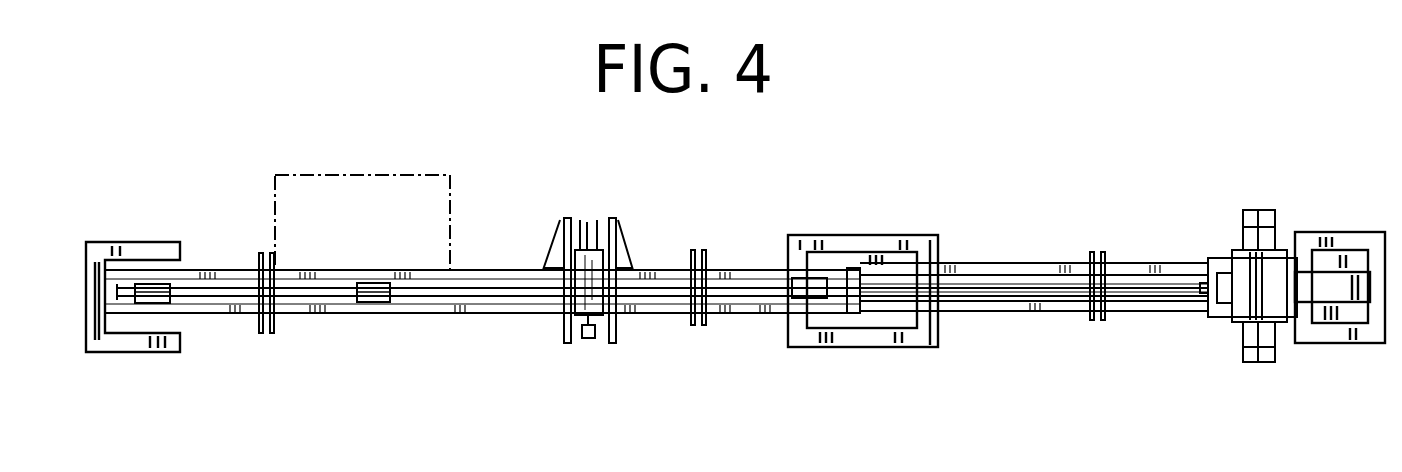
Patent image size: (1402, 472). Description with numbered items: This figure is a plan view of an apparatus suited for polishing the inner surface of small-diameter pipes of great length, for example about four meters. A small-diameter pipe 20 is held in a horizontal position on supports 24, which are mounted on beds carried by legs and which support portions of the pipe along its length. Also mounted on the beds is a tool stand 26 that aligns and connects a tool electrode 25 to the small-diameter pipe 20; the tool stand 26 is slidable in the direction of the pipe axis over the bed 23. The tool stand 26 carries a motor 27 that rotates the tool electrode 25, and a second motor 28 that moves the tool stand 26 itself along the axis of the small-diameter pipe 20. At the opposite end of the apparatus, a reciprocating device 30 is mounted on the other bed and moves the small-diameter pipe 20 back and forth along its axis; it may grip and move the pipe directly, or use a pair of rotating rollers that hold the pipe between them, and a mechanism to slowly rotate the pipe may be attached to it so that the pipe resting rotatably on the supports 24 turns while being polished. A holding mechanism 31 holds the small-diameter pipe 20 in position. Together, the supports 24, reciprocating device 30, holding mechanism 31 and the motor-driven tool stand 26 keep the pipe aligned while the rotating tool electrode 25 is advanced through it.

The small-diameter pipe 20 is at (512, 312).
The bed 23 is at (1013, 263).
The supports 24 is at (182, 330).
The tool electrode 25 is at (1048, 303).
The tool stand 26 is at (1242, 267).
The motor 27 is at (1330, 287).
The motor 28 is at (1245, 337).
The reciprocating device 30 is at (352, 175).
The holding mechanism 31 is at (613, 330).